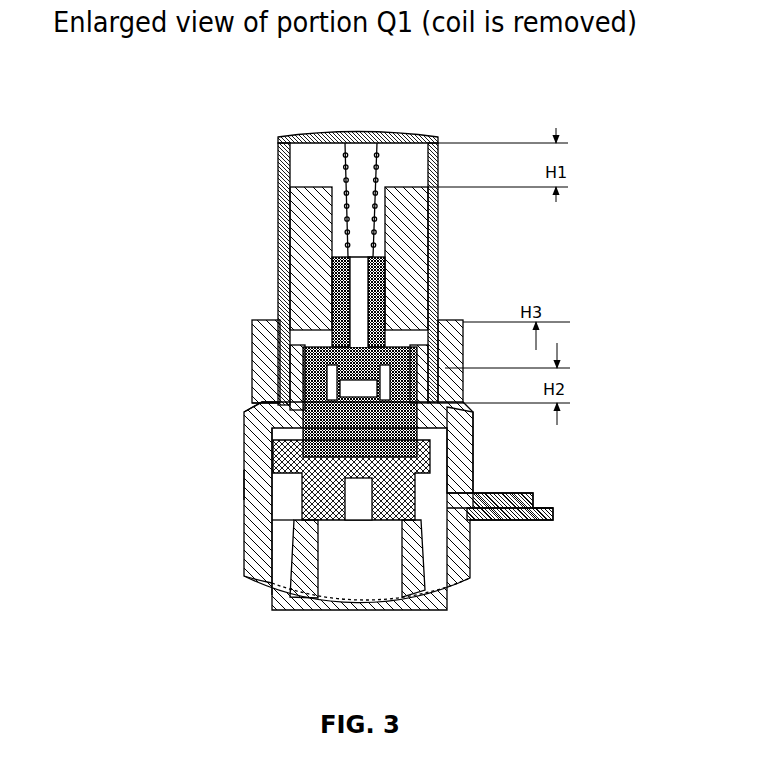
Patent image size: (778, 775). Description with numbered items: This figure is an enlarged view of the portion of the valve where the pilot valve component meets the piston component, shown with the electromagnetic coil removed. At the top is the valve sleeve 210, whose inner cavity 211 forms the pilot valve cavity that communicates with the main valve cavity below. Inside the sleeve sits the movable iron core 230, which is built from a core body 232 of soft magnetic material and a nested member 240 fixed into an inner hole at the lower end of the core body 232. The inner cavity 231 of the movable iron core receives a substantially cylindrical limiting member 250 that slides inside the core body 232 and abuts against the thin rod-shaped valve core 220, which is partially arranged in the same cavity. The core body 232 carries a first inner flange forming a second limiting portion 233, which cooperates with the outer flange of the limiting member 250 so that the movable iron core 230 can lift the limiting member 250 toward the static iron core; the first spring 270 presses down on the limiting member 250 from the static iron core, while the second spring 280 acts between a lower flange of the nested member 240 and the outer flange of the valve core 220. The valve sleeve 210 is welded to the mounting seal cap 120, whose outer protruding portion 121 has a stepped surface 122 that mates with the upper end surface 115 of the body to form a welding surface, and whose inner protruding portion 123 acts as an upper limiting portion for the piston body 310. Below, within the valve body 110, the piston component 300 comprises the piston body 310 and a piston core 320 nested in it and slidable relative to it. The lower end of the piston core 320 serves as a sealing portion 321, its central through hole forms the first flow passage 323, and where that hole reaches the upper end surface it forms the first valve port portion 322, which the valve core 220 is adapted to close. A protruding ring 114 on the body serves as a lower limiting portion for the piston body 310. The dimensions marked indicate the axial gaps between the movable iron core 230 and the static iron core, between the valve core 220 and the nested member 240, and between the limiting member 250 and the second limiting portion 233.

The valve body 110 is at (248, 575).
The protruding ring 114 is at (405, 494).
The upper end surface 115 is at (249, 330).
The mounting seal cap 120 is at (159, 309).
The outer protruding portion 121 is at (265, 323).
The stepped surface of the outer protruding portion 122 is at (250, 337).
The inner protruding portion 123 is at (248, 436).
The valve sleeve 210 is at (282, 202).
The inner cavity of the valve sleeve 211 is at (402, 167).
The valve core 220 is at (268, 418).
The movable iron core 230 is at (225, 379).
The inner cavity of the movable iron core 231 is at (345, 162).
The core body 232 is at (262, 357).
The second limiting portion 233 is at (327, 328).
The nested member 240 is at (475, 448).
The limiting member 250 is at (330, 285).
The first spring 270 is at (303, 133).
The second spring 280 is at (252, 482).
The piston component 300 is at (578, 539).
The piston body 310 is at (452, 522).
The piston core 320 is at (385, 524).
The sealing portion 321 is at (349, 517).
The first valve port portion 322 is at (258, 545).
The first flow passage 323 is at (300, 590).